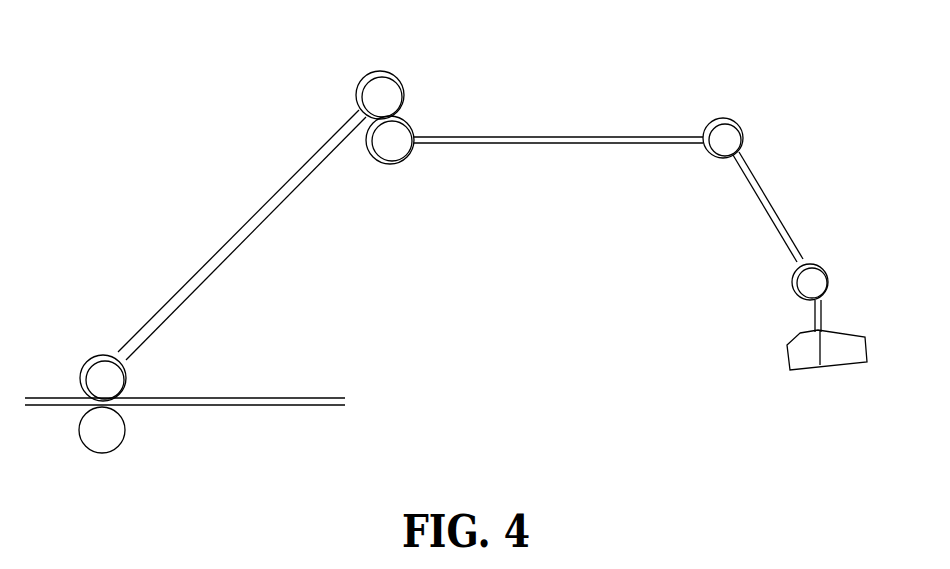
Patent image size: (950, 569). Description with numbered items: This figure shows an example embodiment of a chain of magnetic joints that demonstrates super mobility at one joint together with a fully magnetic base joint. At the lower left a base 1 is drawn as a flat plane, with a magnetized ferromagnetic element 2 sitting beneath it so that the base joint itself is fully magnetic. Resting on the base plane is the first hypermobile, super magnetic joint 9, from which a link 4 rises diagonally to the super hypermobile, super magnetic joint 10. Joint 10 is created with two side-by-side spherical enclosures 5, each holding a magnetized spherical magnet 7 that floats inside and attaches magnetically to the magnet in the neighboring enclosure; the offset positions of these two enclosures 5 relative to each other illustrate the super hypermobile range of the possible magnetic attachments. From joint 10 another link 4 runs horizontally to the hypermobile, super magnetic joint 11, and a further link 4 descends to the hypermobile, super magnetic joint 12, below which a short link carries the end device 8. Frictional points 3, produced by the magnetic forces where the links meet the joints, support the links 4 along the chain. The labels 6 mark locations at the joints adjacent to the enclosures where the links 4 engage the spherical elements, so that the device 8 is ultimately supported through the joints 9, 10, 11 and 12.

The base 1 is at (50, 407).
The magnetized ferromagnetic element 2 is at (107, 430).
The frictional points 3 is at (728, 158).
The link 4 is at (813, 317).
The enclosure 5 is at (100, 350).
The roller nip 6 is at (127, 362).
The magnetized spherical ferromagnetic element 7 is at (100, 380).
The end device 8 is at (808, 355).
The hypermobile magnetic joint 9 is at (83, 393).
The super hypermobile magnetic joint 10 is at (417, 108).
The hypermobile magnetic joint 11 is at (743, 157).
The hypermobile magnetic joint 12 is at (828, 308).